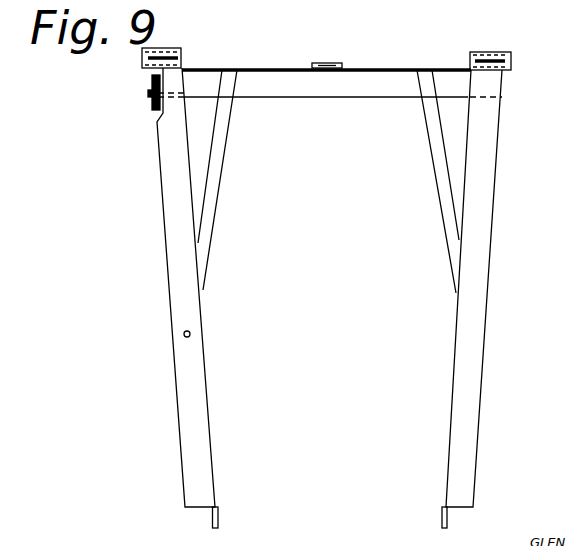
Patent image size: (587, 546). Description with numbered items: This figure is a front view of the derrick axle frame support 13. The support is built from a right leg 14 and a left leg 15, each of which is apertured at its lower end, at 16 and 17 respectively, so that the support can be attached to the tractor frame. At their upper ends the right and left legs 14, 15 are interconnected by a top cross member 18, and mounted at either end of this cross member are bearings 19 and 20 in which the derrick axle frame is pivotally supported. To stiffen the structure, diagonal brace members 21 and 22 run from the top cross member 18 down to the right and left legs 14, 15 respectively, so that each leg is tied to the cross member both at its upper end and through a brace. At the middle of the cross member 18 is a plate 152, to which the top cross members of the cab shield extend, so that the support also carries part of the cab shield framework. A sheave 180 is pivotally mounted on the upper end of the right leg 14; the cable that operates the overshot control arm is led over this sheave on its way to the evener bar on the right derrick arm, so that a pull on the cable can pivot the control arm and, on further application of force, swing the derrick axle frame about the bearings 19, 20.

The derrick axle frame support 13 is at (147, 182).
The right leg 14 is at (173, 240).
The left leg 15 is at (477, 227).
The aperture 16 is at (212, 515).
The aperture 17 is at (448, 516).
The cross member 18 is at (343, 83).
The bearing 19 is at (142, 60).
The bearing 20 is at (512, 60).
The diagonal brace member 21 is at (212, 197).
The diagonal brace member 22 is at (440, 187).
The plate 152 is at (335, 63).
The sheave 180 is at (152, 102).